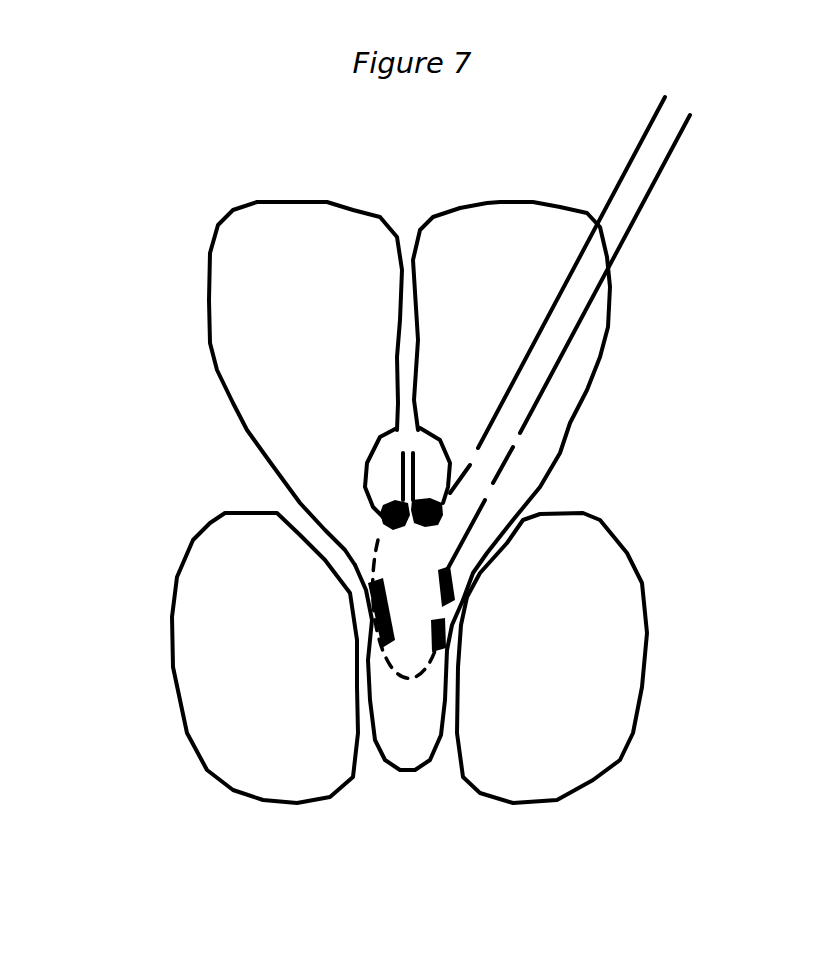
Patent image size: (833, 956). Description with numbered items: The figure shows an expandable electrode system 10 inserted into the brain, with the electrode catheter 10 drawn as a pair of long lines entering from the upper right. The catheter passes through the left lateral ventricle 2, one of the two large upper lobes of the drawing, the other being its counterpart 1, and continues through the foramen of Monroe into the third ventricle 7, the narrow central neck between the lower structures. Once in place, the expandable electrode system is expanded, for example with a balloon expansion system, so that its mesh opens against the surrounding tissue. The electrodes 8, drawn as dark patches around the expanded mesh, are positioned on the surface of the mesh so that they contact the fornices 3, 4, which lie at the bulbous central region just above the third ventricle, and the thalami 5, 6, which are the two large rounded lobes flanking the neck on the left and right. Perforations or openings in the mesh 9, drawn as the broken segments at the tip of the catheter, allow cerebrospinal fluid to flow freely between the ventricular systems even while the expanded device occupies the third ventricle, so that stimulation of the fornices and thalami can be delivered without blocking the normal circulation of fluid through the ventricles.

The first lateral lobe 1 is at (300, 287).
The left lateral ventricle 2 is at (499, 288).
The fornix 3 is at (383, 478).
The fornix 4 is at (434, 480).
The thalamus 5 is at (270, 645).
The thalamus 6 is at (537, 645).
The third ventricle 7 is at (385, 724).
The electrodes 8 is at (437, 645).
The perforations or openings in the mesh 9 is at (492, 490).
The expandable electrode system 10 is at (652, 177).